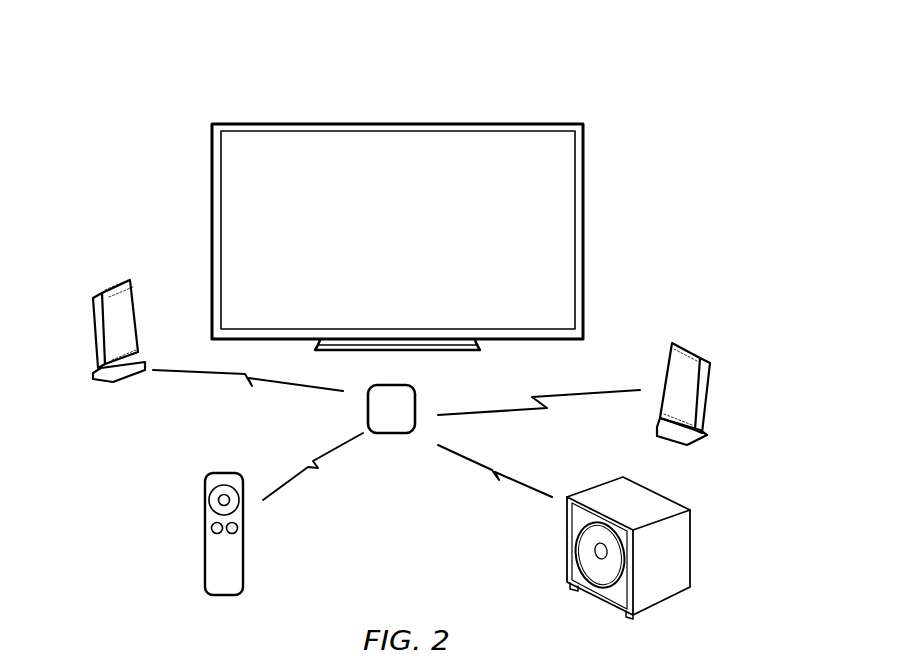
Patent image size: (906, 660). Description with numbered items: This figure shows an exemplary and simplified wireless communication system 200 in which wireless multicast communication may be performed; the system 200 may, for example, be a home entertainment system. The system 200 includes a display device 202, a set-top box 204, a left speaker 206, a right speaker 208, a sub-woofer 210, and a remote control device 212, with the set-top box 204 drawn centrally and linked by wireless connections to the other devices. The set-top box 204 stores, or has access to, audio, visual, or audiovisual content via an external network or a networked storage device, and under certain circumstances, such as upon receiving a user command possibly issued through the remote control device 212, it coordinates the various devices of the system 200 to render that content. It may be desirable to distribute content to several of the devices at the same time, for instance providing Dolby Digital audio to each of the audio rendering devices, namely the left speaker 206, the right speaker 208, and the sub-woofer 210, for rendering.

The wireless communication system 200 is at (593, 96).
The display device 202 is at (270, 124).
The set-top box 204 is at (368, 410).
The left speaker 206 is at (93, 330).
The right speaker 208 is at (710, 387).
The sub-woofer 210 is at (567, 547).
The remote control device 212 is at (228, 473).